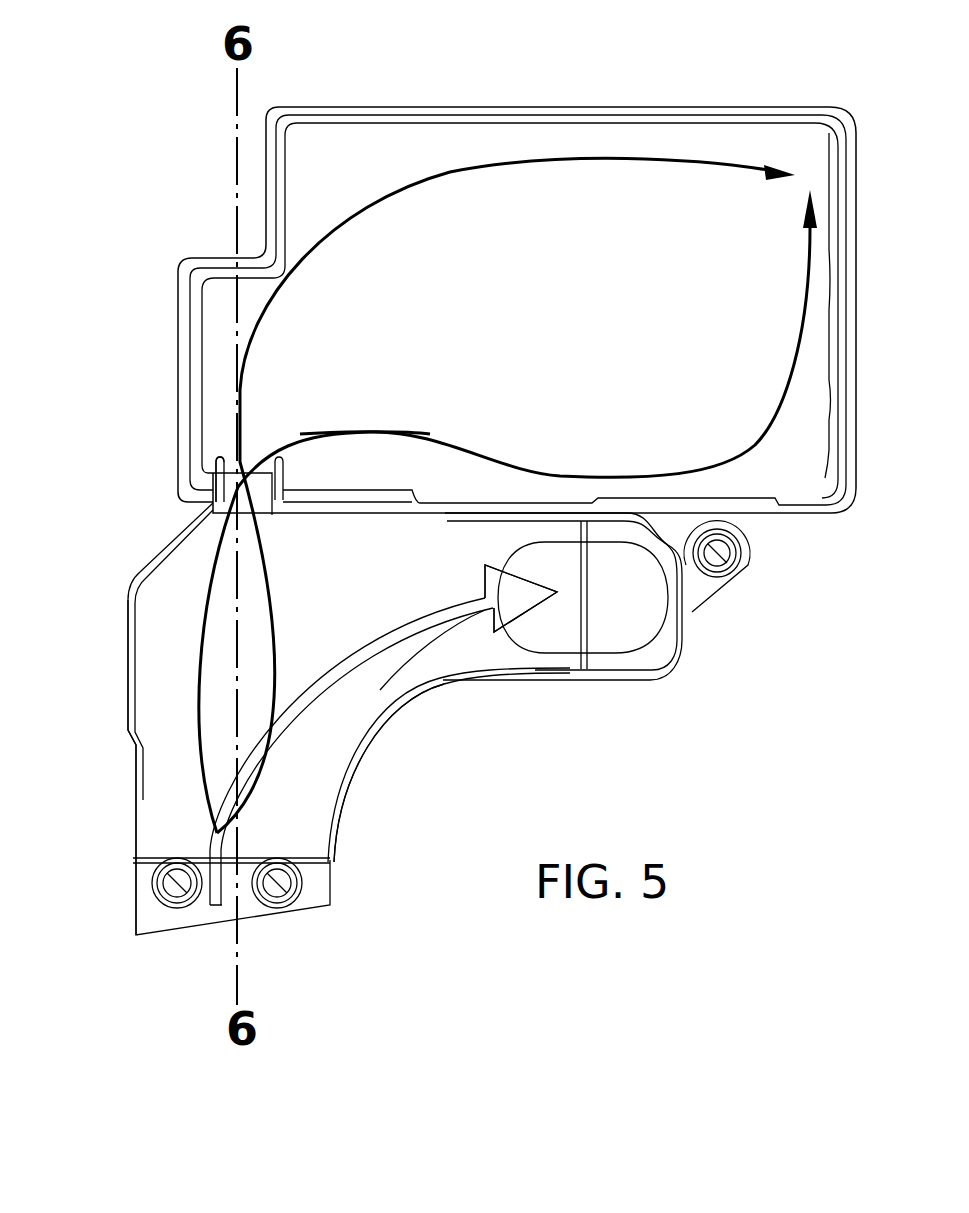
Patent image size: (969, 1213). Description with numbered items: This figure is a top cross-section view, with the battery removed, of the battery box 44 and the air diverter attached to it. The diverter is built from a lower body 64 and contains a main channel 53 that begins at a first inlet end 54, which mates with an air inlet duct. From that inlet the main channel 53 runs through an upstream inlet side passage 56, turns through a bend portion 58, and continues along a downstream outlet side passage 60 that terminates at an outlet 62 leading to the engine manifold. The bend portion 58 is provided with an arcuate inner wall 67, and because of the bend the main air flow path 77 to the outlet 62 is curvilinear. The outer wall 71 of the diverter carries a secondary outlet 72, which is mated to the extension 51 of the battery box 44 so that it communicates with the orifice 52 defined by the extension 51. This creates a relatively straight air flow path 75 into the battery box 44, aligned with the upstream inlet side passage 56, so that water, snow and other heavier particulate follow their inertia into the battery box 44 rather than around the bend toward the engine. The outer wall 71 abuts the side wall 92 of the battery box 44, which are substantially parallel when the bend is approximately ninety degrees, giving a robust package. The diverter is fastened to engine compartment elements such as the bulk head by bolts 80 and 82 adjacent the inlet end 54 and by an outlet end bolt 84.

The battery box 44 is at (560, 280).
The extension 51 is at (215, 470).
The orifice 52 is at (233, 483).
The main channel 53 is at (272, 815).
The first inlet end 54 is at (220, 928).
The upstream inlet side passage 56 is at (192, 836).
The bend portion 58 is at (178, 598).
The downstream outlet side passage 60 is at (473, 624).
The outlet 62 is at (633, 602).
The lower body 64 is at (132, 686).
The arcuate inner wall 67 is at (373, 740).
The outer wall 71 is at (552, 513).
The secondary outlet 72 is at (257, 515).
The air flow path 75 is at (237, 570).
The main air flow path 77 is at (425, 617).
The bolt 80 is at (175, 905).
The bolt 82 is at (273, 905).
The outlet end bolt 84 is at (742, 565).
The side wall 92 is at (477, 490).